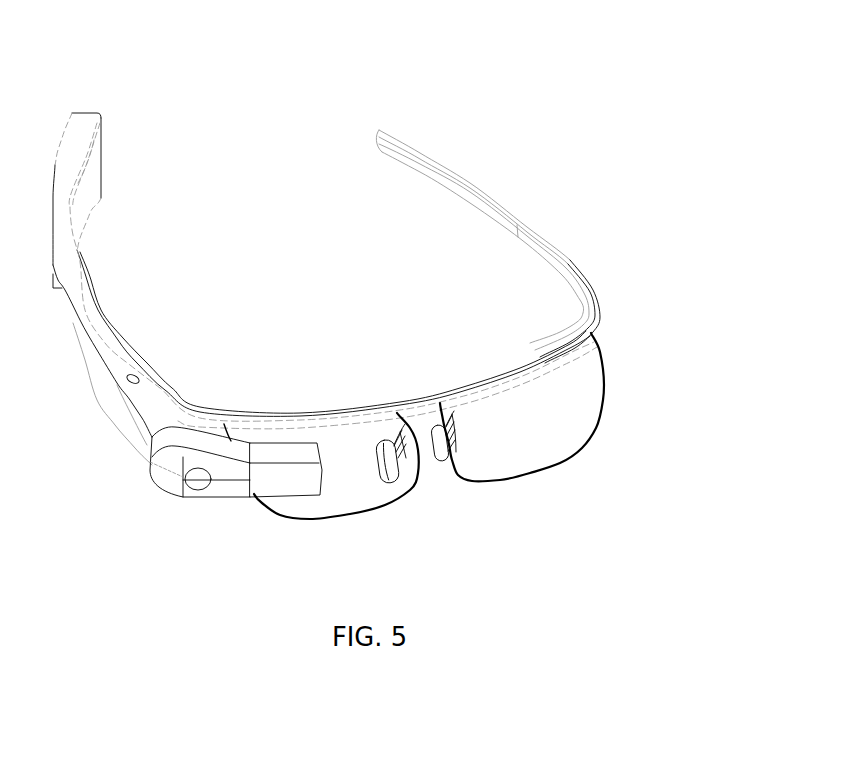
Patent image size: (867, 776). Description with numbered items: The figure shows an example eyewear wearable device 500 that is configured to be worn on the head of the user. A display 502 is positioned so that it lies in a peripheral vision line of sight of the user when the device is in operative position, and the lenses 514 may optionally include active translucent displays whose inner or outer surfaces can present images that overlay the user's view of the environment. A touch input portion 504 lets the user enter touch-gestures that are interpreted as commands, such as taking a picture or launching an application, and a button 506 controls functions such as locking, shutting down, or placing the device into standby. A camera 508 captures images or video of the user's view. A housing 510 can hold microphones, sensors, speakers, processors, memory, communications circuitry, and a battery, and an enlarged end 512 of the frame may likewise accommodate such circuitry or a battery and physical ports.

The device 500 is at (378, 73).
The display 502 is at (300, 487).
The touch input portion 504 is at (95, 366).
The button 506 is at (140, 379).
The camera 508 is at (200, 490).
The housing 510 is at (152, 417).
The enlarged end 512 is at (102, 166).
The lenses 514 is at (472, 473).